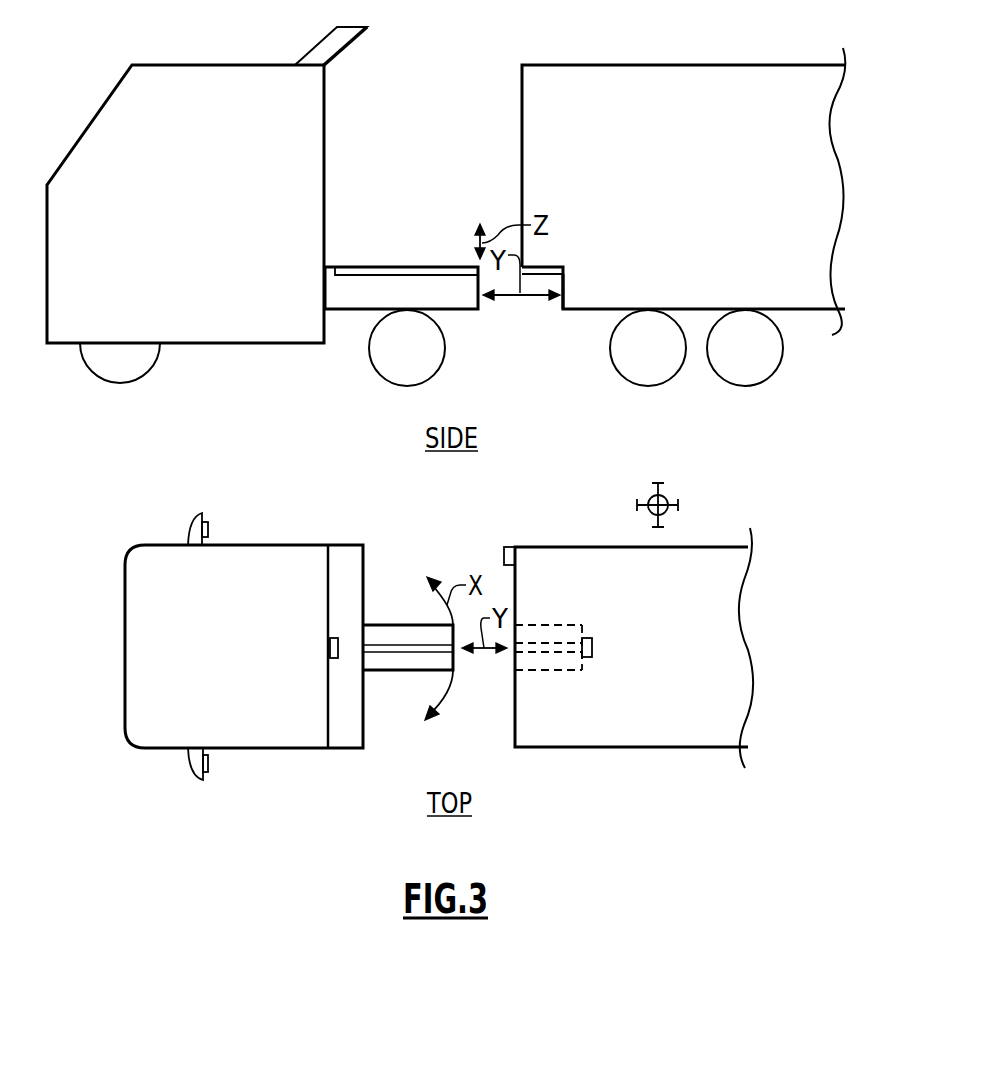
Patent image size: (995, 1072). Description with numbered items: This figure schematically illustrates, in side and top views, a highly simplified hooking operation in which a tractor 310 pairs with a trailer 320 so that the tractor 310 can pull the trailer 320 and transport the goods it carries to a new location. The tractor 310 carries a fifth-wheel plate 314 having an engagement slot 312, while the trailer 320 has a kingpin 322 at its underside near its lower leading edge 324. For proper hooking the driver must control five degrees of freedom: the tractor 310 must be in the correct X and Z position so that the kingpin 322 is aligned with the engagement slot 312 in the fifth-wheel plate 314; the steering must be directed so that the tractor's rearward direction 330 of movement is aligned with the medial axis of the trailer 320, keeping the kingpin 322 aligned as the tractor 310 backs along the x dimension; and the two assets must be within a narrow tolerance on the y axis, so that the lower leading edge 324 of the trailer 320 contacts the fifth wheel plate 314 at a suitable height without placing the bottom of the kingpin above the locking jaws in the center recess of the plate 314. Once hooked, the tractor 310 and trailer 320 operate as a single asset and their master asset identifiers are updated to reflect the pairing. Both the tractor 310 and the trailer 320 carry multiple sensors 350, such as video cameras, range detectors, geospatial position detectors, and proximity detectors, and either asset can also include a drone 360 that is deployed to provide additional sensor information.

The tractor 310 is at (212, 65).
The engagement slot 312 is at (382, 267).
The fifth-wheel plate 314 is at (360, 300).
The trailer 320 is at (670, 65).
The kingpin 322 is at (553, 267).
The lower leading edge 324 is at (560, 310).
The rearward direction 330 is at (531, 296).
The sensors 350 is at (209, 531).
The drone 360 is at (666, 497).